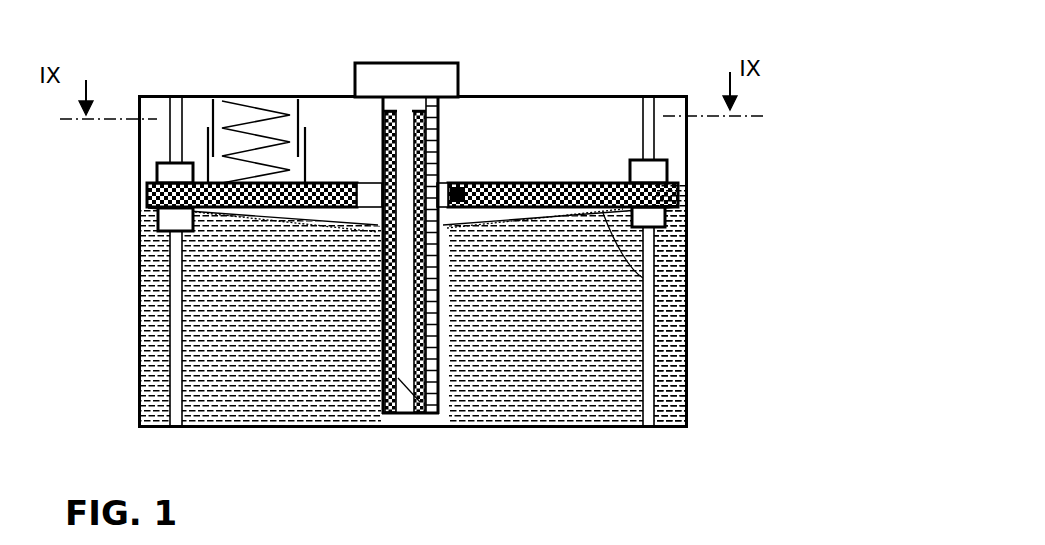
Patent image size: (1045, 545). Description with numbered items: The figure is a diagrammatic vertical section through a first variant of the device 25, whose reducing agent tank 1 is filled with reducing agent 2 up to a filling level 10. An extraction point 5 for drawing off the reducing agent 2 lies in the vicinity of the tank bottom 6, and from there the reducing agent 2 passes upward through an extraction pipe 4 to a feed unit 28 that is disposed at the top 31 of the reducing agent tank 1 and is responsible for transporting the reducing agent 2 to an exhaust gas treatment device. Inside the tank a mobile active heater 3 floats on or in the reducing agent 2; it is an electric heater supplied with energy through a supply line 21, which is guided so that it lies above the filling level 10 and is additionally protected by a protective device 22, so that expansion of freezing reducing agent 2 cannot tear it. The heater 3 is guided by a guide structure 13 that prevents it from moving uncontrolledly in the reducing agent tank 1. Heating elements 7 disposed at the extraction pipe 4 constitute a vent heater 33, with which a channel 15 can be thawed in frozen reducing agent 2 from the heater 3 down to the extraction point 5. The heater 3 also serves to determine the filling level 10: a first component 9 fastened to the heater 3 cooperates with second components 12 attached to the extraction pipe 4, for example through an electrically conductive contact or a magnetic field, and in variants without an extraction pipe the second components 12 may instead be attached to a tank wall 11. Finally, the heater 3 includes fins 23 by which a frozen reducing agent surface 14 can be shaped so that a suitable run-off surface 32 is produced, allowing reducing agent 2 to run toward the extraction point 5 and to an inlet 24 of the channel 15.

The reducing agent tank 1 is at (633, 93).
The reducing agent 2 is at (678, 413).
The heater 3 is at (672, 193).
The extraction pipe 4 is at (440, 130).
The extraction point 5 is at (405, 414).
The tank bottom 6 is at (490, 428).
The heating elements 7 is at (428, 414).
The first component 9 is at (461, 186).
The filling level 10 is at (129, 197).
The tank wall 11 is at (688, 258).
The second components 12 is at (383, 142).
The guide structure 13 is at (170, 325).
The frozen reducing agent surface 14 is at (680, 203).
The channel 15 is at (383, 295).
The supply line 21 is at (253, 123).
The protective device 22 is at (207, 102).
The fins 23 is at (467, 215).
The inlet 24 is at (380, 237).
The device 25 is at (126, 69).
The feed unit 28 is at (458, 63).
The top 31 is at (565, 93).
The run-off surface 32 is at (662, 272).
The vent heater 33 is at (383, 328).